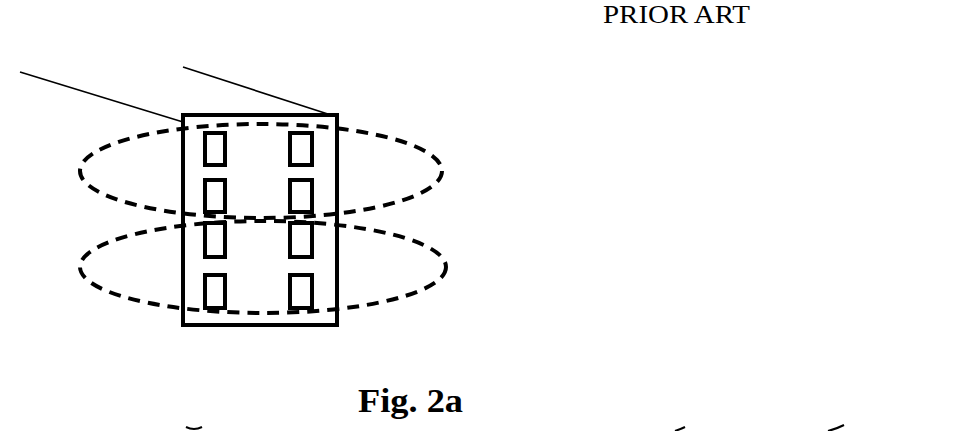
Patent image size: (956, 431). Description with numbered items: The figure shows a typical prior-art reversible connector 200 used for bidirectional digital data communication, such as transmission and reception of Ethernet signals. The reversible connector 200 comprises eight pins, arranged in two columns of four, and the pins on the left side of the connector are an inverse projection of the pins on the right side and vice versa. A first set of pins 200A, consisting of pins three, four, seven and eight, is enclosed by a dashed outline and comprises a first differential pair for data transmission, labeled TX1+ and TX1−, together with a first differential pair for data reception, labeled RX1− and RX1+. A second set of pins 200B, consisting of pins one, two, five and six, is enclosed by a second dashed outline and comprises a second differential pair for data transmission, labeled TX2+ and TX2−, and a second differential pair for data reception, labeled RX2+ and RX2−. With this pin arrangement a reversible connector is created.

The reversible connector 200 is at (63, 286).
The first set of pins 200A is at (458, 270).
The second set of pins 200B is at (457, 178).